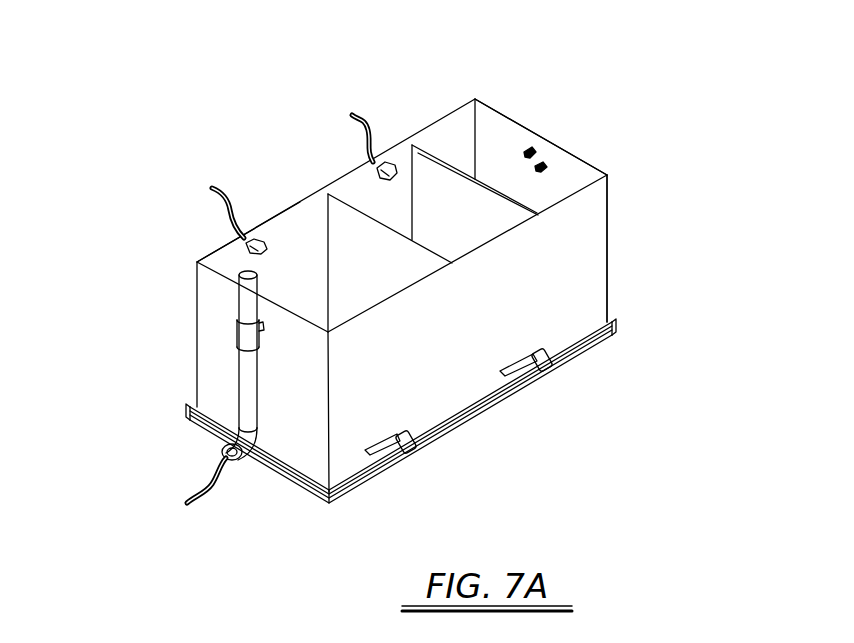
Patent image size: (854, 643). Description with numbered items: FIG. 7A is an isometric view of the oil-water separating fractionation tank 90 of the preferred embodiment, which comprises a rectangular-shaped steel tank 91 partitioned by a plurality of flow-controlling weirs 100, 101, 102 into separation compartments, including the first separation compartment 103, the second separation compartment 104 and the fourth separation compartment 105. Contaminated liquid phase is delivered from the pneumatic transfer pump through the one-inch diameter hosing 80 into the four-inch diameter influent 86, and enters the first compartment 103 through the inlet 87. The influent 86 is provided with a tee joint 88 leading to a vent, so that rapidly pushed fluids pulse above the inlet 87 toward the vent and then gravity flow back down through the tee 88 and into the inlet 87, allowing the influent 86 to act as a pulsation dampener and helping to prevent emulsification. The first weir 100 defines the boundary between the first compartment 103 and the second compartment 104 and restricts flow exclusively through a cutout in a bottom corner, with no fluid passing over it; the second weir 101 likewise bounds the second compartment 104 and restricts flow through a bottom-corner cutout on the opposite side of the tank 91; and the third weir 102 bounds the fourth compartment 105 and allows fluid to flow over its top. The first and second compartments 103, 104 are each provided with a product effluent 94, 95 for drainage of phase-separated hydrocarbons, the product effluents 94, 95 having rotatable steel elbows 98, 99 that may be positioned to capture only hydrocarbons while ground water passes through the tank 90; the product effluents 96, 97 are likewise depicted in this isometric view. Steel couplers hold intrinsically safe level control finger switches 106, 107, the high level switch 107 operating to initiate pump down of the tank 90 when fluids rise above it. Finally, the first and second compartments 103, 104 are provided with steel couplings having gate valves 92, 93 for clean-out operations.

The hosing 80 is at (207, 487).
The influent 86 is at (247, 387).
The inlet 87 is at (262, 328).
The tee joint 88 is at (240, 338).
The oil-water separating fractionation tank 90 is at (136, 131).
The rectangular-shaped steel tank 91 is at (533, 270).
The gate valve 92 is at (403, 453).
The gate valve 93 is at (543, 370).
The product effluent 94 is at (237, 246).
The product effluent 95 is at (392, 163).
The product effluent 96 is at (243, 237).
The product effluent 97 is at (353, 114).
The rotatable steel elbow 98 is at (258, 243).
The rotatable steel elbow 99 is at (377, 170).
The first weir 100 is at (392, 266).
The second weir 101 is at (465, 212).
The third weir 102 is at (522, 197).
The first separation compartment 103 is at (320, 315).
The second separation compartment 104 is at (437, 153).
The fourth separation compartment 105 is at (496, 180).
The level control finger switch 106 is at (528, 150).
The high level switch 107 is at (552, 176).